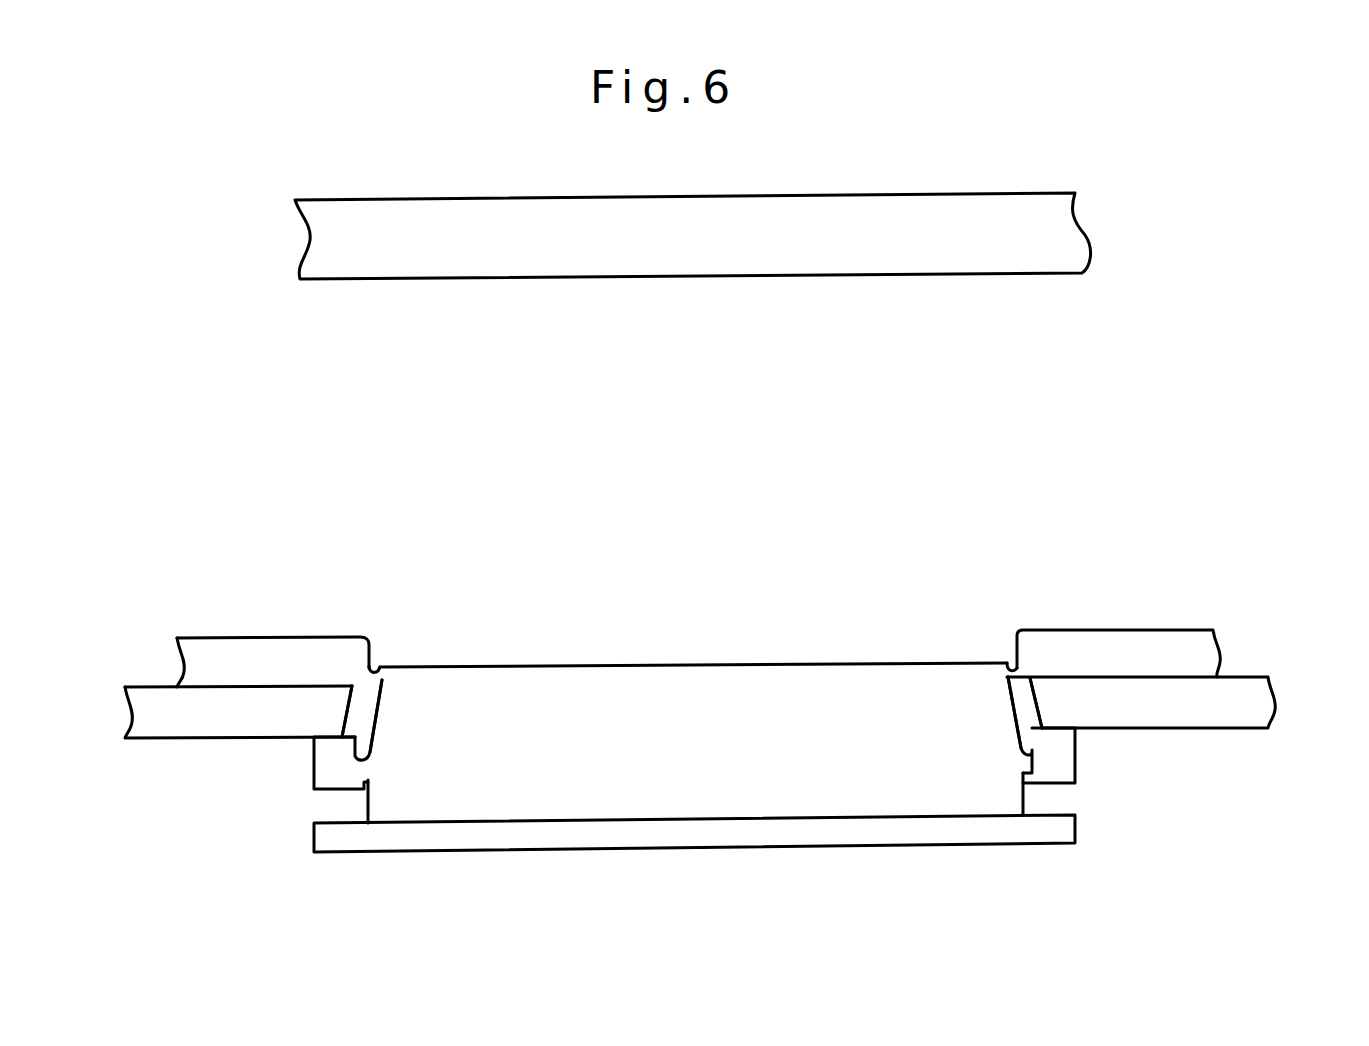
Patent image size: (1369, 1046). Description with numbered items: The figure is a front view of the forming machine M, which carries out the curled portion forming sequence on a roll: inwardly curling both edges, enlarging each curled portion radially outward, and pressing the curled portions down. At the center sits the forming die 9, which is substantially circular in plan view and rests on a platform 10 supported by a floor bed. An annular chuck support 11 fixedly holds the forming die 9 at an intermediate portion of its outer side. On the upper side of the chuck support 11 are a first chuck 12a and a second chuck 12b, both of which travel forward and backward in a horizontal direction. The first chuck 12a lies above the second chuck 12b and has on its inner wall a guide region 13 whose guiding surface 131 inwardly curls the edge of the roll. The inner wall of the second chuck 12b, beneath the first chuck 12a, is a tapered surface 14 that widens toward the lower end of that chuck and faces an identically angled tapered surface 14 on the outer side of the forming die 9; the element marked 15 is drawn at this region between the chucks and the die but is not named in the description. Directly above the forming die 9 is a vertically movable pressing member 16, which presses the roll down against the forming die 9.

The pressing member 16 is at (1025, 208).
The forming machine M is at (1153, 385).
The platform 10 is at (913, 833).
The forming die 9 is at (858, 678).
The first chuck 12a is at (222, 655).
The second chuck 12b is at (165, 707).
The guiding surface 131 is at (373, 650).
The guide region 13 is at (383, 678).
The tapered surface 14 is at (345, 708).
The contact portion 15 is at (378, 720).
The chuck support 11 is at (312, 780).